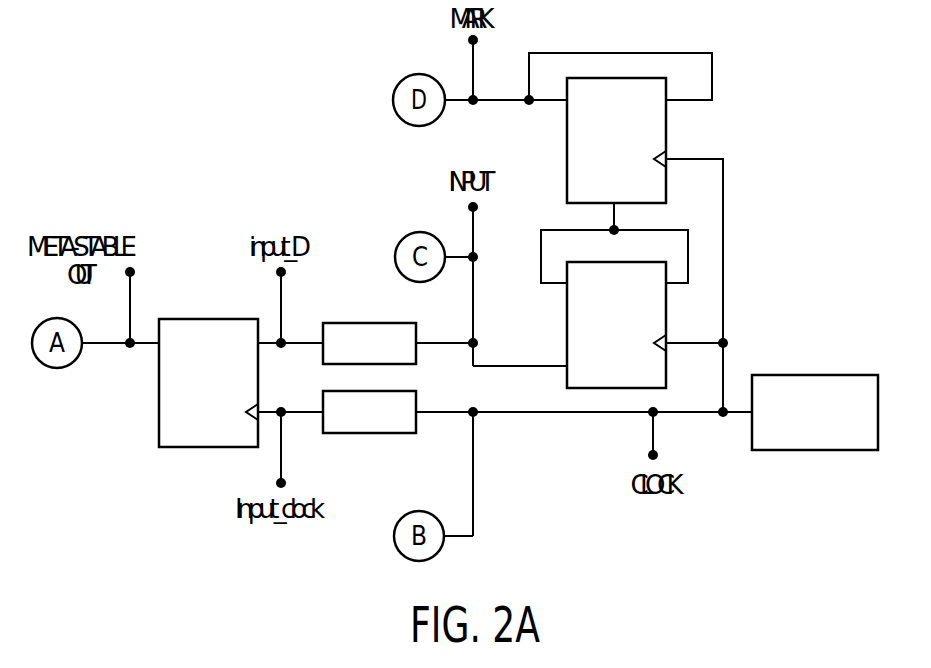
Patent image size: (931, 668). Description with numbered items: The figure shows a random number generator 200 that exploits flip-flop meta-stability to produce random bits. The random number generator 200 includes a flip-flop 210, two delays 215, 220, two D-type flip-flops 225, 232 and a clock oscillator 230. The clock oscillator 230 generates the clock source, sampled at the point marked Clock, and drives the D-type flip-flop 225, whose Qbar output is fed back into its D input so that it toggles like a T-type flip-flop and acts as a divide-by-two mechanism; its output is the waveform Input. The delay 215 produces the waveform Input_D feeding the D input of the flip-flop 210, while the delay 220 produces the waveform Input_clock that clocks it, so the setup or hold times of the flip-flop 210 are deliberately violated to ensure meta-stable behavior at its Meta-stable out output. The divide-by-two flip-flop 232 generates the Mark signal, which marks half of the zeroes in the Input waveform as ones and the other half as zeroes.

The random number generator 200 is at (178, 111).
The flip-flop 210 is at (215, 319).
The delay 215 is at (372, 323).
The delay 220 is at (372, 433).
The D-type flip-flop 225 is at (567, 331).
The clock oscillator 230 is at (819, 375).
The D-type flip-flop 232 is at (666, 128).